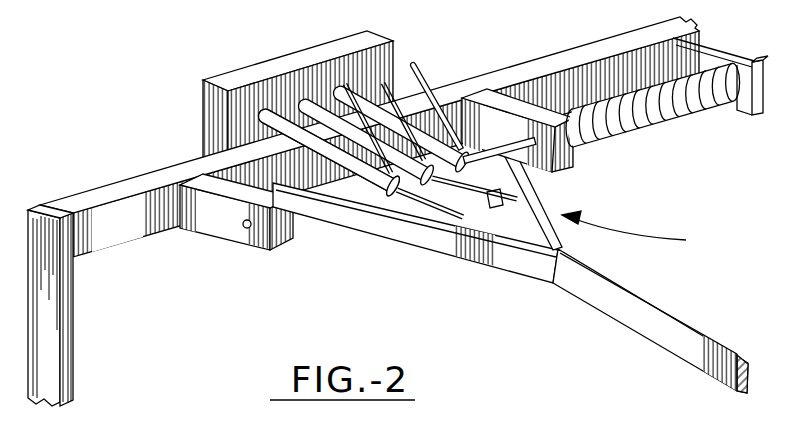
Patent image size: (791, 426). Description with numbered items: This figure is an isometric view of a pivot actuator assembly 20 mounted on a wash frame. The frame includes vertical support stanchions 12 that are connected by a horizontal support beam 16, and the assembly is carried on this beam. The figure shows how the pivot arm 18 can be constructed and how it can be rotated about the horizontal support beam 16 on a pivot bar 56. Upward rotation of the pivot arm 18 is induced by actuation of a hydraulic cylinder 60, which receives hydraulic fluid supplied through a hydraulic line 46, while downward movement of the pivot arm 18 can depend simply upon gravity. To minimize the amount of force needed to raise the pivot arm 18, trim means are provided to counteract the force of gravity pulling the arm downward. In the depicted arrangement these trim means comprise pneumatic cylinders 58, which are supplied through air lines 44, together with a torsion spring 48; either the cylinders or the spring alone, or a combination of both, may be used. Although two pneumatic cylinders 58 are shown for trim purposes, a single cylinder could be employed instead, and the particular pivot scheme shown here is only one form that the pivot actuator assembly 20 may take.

The vertical support stanchion 12 is at (72, 370).
The horizontal support beam 16 is at (127, 187).
The pivot arm 18 is at (597, 303).
The pivot actuator assembly 20 is at (639, 231).
The air line 44 is at (368, 92).
The hydraulic line 46 is at (393, 97).
The torsion spring 48 is at (633, 128).
The pivot bar 56 is at (247, 229).
The pneumatic cylinder 58 is at (345, 90).
The hydraulic cylinder 60 is at (315, 100).